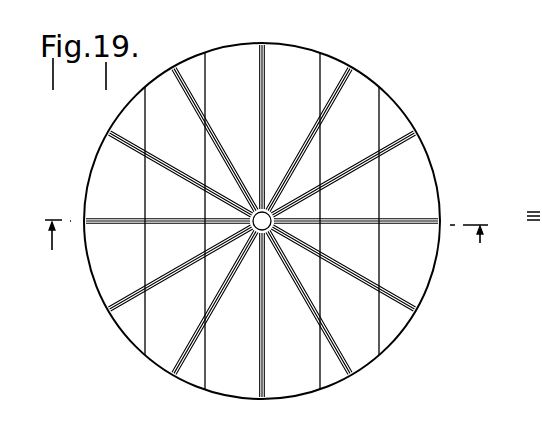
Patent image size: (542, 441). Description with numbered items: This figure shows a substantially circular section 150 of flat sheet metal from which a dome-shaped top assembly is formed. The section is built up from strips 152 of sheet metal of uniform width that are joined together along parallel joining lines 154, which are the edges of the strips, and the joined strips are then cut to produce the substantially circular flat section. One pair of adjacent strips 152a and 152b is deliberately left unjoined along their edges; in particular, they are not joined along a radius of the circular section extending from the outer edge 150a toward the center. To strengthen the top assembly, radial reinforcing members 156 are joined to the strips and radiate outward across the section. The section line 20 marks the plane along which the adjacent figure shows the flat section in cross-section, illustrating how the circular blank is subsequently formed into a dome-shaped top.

The section line 20 is at (291, 244).
The substantially circular section 150 is at (384, 88).
The outer edge 150a is at (300, 50).
The strips 152 is at (367, 180).
The adjacent strip 152a is at (298, 362).
The adjacent strip 152b is at (220, 367).
The parallel joining lines 154 is at (320, 305).
The radial reinforcing members 156 is at (258, 97).